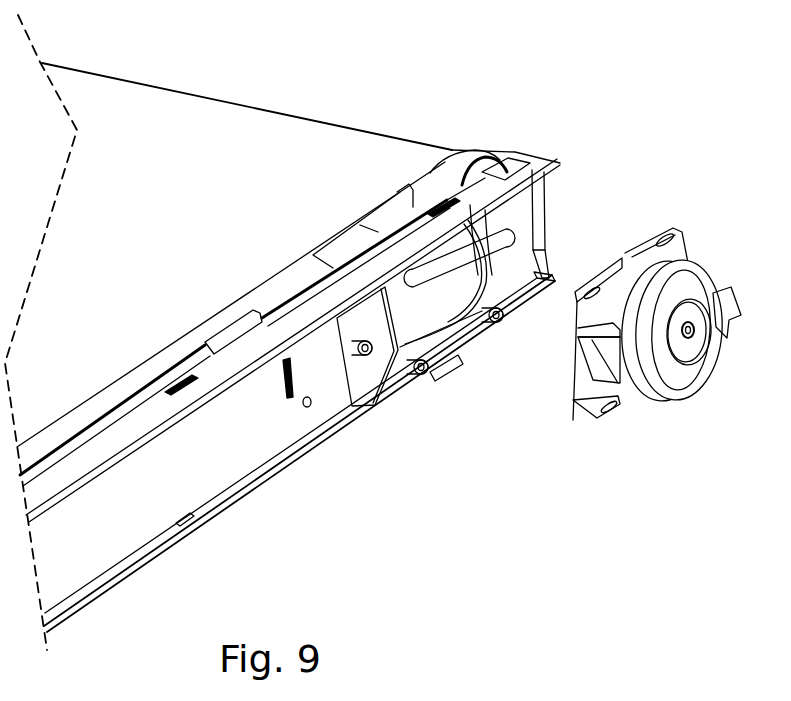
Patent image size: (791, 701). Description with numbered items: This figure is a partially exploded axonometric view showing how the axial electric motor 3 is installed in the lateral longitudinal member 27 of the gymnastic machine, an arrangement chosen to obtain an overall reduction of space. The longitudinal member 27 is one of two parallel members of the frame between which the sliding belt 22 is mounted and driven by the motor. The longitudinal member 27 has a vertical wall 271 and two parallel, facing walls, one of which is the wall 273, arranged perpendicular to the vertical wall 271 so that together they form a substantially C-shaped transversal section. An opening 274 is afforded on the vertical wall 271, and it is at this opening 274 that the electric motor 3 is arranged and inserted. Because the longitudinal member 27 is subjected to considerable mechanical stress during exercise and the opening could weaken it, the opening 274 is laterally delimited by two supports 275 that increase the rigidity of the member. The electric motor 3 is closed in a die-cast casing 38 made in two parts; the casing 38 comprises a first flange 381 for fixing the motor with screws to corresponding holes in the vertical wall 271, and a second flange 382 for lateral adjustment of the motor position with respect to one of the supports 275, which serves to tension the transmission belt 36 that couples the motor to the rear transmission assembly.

The sliding belt 22 is at (377, 143).
The lateral longitudinal member 27 is at (315, 366).
The vertical wall 271 is at (128, 527).
The wall 273 is at (263, 488).
The opening 274 is at (436, 320).
The support 275 is at (528, 233).
The transmission belt 36 is at (467, 162).
The axial electric motor 3 is at (657, 327).
The die-cast casing 38 is at (688, 380).
The first flange 381 is at (657, 235).
The second flange 382 is at (582, 378).